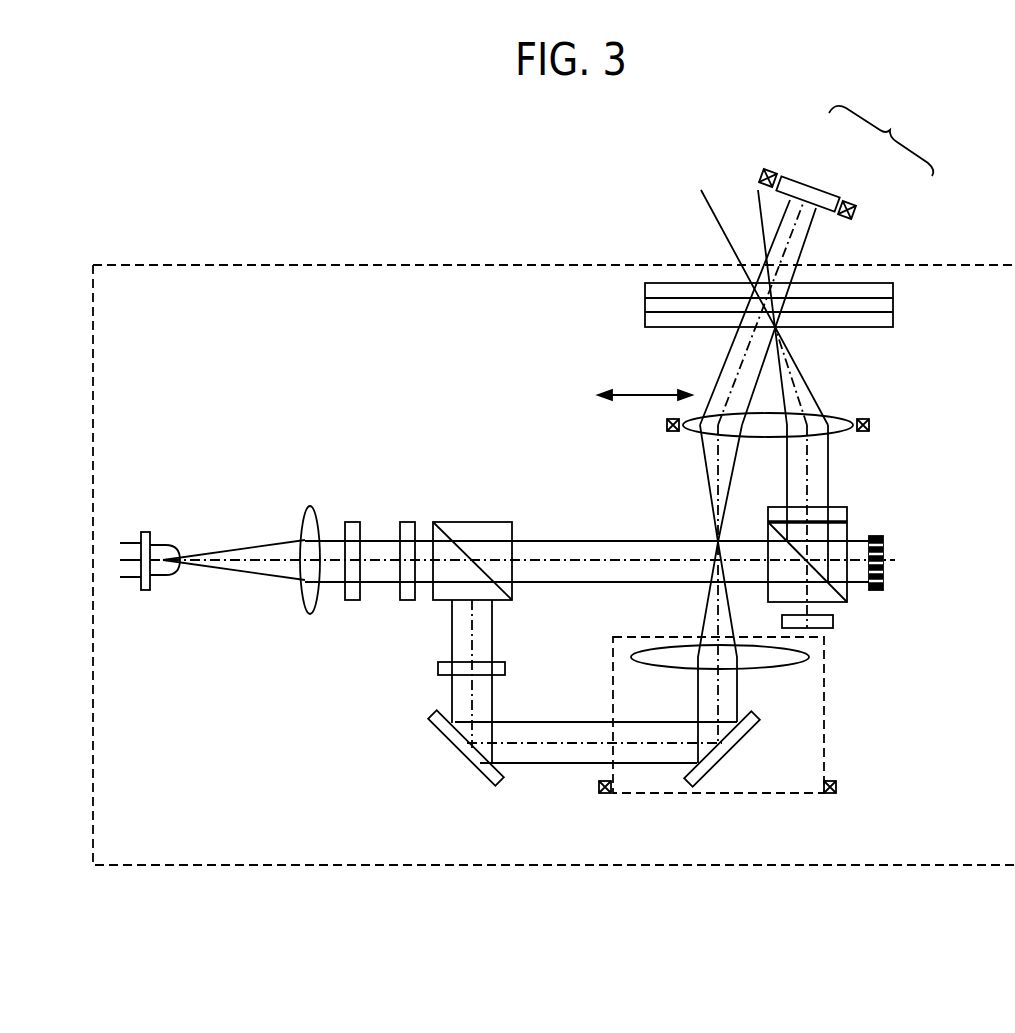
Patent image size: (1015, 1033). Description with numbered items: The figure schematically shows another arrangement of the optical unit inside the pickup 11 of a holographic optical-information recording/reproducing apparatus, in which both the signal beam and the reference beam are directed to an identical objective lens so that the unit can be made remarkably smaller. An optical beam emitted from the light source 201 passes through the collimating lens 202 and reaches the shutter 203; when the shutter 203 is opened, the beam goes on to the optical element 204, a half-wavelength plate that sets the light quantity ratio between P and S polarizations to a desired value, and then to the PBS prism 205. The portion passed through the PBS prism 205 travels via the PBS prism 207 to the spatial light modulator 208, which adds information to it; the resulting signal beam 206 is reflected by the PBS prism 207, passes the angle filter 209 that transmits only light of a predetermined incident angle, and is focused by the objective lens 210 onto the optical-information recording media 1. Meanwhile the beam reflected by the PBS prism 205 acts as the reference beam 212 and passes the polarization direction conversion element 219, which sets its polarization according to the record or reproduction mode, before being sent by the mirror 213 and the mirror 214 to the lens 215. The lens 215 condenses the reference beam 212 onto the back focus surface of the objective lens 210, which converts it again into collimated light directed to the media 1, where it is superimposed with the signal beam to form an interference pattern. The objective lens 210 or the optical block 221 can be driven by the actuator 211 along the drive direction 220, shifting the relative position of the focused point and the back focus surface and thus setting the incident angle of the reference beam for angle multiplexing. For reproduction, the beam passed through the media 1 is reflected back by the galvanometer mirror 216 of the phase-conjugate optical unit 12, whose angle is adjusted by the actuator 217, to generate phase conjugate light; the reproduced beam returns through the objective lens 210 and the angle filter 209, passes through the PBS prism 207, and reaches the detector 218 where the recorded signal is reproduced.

The optical-information recording media 1 is at (644, 316).
The pickup 11 is at (274, 270).
The phase-conjugate optical unit 12 is at (881, 136).
The light source 201 is at (176, 545).
The collimating lens 202 is at (309, 505).
The shutter 203 is at (352, 521).
The optical element 204 is at (407, 521).
The PBS prism 205 is at (472, 521).
The signal beam 206 is at (601, 540).
The PBS prism 207 is at (842, 532).
The spatial light modulator 208 is at (886, 560).
The angle filter 209 is at (840, 508).
The objective lens 210 is at (838, 417).
The actuator 211 is at (872, 425).
The reference beam 212 is at (556, 722).
The mirror 213 is at (460, 758).
The mirror 214 is at (728, 752).
The lens 215 is at (809, 658).
The galvanometer mirror 216 is at (814, 184).
The actuator 217 is at (862, 208).
The detector 218 is at (834, 622).
The polarization direction conversion element 219 is at (438, 668).
The drive direction 220 is at (642, 399).
The optical block 221 is at (663, 795).